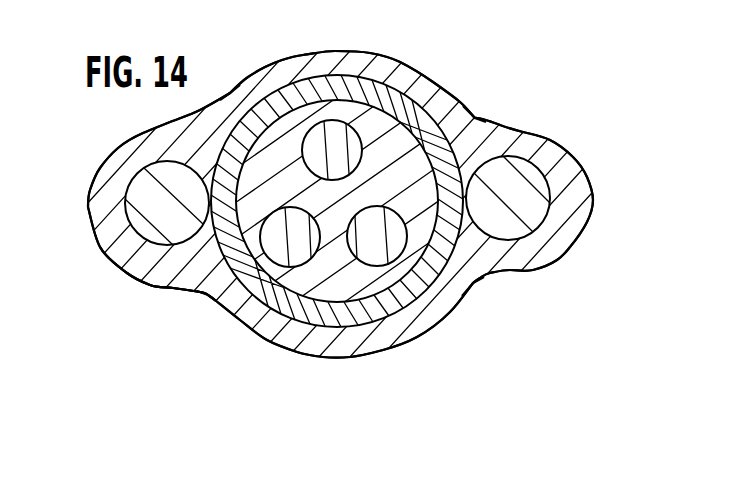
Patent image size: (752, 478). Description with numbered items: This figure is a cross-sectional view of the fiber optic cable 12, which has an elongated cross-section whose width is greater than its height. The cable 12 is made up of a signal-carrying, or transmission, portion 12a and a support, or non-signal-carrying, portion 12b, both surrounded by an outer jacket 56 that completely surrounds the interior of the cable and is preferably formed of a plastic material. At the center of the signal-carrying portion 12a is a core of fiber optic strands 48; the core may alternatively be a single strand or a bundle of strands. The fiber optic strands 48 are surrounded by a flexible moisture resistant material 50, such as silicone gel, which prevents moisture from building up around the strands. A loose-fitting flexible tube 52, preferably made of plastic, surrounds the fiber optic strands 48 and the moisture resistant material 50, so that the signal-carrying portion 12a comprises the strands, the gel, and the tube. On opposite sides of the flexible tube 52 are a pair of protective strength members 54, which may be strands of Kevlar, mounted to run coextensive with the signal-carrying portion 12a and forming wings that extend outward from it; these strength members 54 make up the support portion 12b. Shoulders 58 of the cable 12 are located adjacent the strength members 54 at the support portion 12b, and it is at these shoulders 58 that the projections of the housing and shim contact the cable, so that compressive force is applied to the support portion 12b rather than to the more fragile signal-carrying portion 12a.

The fiber optic cable 12 is at (294, 363).
The signal-carrying portion 12a is at (363, 340).
The support portion 12b is at (575, 188).
The fiber optic strands 48 is at (347, 138).
The moisture resistant material 50 is at (298, 132).
The flexible tube 52 is at (152, 287).
The strength members 54 is at (505, 182).
The outer jacket 56 is at (560, 157).
The shoulders 58 is at (229, 92).